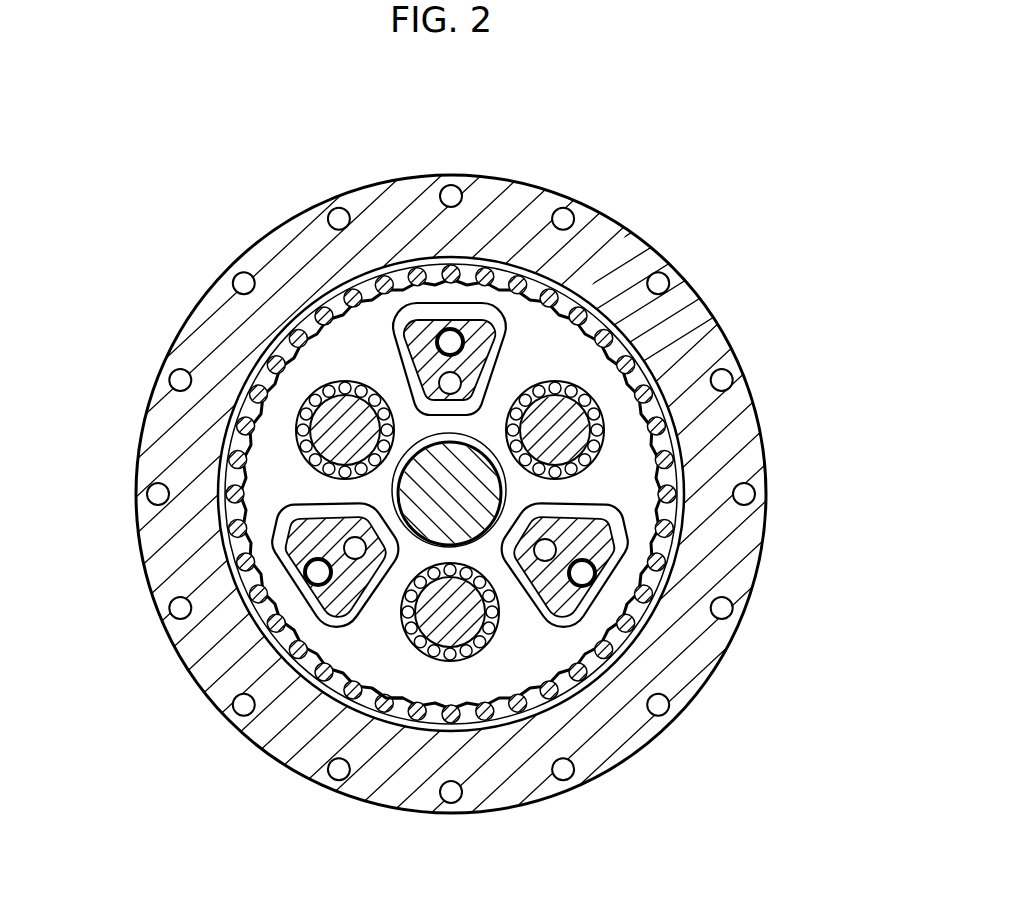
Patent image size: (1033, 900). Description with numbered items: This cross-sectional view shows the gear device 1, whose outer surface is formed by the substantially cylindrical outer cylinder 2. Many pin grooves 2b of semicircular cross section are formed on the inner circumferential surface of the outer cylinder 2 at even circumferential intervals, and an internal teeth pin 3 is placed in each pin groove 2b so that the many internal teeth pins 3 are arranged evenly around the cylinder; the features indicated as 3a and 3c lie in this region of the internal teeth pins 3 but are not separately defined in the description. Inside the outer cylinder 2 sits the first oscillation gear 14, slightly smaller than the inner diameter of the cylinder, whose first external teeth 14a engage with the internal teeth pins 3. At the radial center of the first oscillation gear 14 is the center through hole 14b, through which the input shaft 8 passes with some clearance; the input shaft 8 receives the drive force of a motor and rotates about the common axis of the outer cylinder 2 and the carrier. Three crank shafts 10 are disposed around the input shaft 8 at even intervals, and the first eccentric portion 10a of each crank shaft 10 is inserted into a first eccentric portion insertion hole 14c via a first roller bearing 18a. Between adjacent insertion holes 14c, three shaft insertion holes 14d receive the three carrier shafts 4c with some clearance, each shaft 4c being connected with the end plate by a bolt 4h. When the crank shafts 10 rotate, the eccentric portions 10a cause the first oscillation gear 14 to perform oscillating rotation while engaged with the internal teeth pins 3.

The gear device 1 is at (763, 115).
The outer cylinder 2 is at (488, 197).
The pin groove 2b is at (686, 560).
The internal teeth pin 3 is at (672, 455).
The internal tooth pin 3a is at (680, 437).
The internal gear body 3c is at (672, 463).
The shaft 4c is at (475, 325).
The bolt 4h is at (586, 574).
The input shaft 8 is at (471, 468).
The crank shaft 10 is at (516, 450).
The first eccentric portion 10a is at (567, 397).
The first oscillation gear 14 is at (620, 393).
The first external teeth 14a is at (594, 659).
The center through hole 14b is at (413, 447).
The first eccentric portion insertion hole 14c is at (418, 648).
The shaft insertion hole 14d is at (273, 525).
The first roller bearing 18a is at (498, 638).